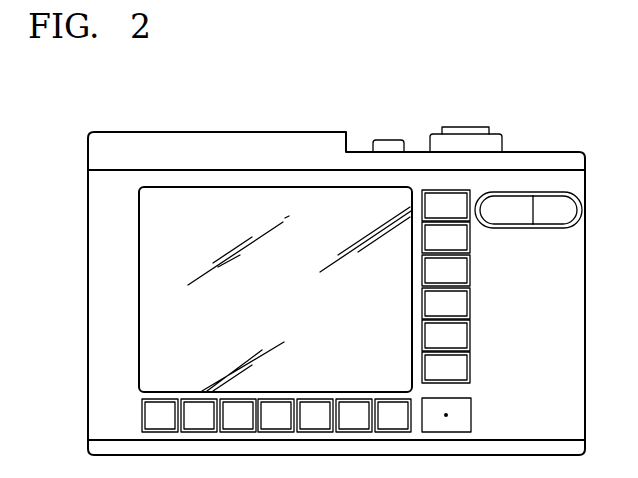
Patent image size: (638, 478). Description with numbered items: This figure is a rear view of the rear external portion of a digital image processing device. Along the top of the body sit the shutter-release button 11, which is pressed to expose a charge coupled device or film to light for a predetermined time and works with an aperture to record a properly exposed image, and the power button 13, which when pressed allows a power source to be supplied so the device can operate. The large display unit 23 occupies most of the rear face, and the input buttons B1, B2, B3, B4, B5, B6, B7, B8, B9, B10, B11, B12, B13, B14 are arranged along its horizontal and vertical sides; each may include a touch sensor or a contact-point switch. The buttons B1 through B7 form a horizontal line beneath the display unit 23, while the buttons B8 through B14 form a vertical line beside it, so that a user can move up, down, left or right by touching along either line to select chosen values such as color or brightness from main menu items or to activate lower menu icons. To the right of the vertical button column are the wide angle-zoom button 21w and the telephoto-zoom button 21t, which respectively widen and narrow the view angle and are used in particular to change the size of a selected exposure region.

The shutter-release button 11 is at (466, 132).
The power button 13 is at (388, 141).
The display unit 23 is at (195, 198).
The wide angle-zoom button 21w is at (528, 210).
The telephoto-zoom button 21t is at (555, 210).
The input button B1 is at (160, 415).
The input button B2 is at (199, 415).
The input button B3 is at (238, 415).
The input button B4 is at (276, 415).
The input button B5 is at (315, 415).
The input button B6 is at (354, 415).
The input button B7 is at (393, 415).
The input button B8 is at (446, 205).
The input button B9 is at (446, 237).
The input button B10 is at (446, 270).
The input button B11 is at (446, 303).
The input button B12 is at (446, 335).
The input button B13 is at (446, 367).
The input button B14 is at (471, 415).